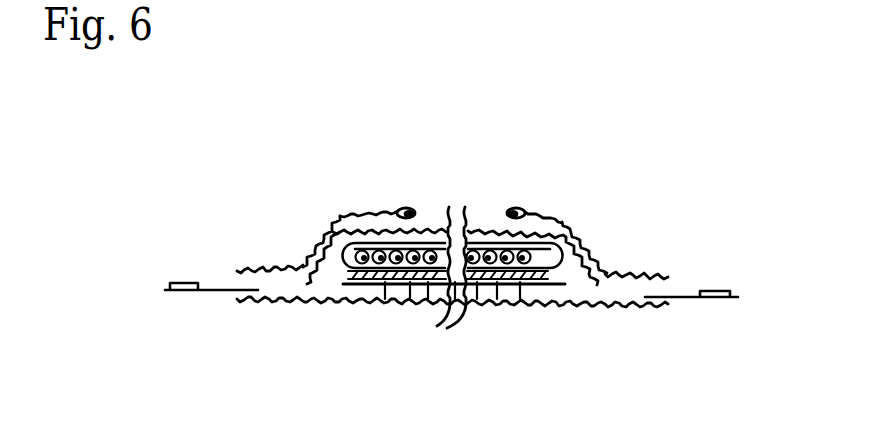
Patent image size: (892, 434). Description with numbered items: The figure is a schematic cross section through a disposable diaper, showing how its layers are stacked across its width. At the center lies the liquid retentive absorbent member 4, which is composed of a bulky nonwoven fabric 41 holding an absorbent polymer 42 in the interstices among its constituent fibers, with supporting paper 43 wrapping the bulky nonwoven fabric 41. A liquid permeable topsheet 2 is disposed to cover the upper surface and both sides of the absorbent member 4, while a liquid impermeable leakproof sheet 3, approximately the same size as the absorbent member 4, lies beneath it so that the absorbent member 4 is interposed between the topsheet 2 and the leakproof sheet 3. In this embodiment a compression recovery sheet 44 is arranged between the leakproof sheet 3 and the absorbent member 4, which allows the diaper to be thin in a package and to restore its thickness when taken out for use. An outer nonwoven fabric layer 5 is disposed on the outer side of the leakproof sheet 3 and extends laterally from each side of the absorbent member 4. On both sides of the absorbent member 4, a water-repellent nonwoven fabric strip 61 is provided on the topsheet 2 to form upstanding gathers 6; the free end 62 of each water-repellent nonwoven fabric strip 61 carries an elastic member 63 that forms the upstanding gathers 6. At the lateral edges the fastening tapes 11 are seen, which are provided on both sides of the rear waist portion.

The topsheet 2 is at (483, 212).
The leakproof sheet 3 is at (360, 286).
The absorbent member 4 is at (497, 368).
The outer nonwoven fabric layer 5 is at (293, 297).
The upstanding gathers 6 is at (285, 137).
The fastening tapes 11 is at (707, 333).
The bulky nonwoven fabric 41 is at (383, 282).
The absorbent polymer 42 is at (407, 282).
The supporting paper 43 is at (475, 285).
The compression recovery sheet 44 is at (520, 284).
The water-repellent nonwoven fabric strip 61 is at (575, 208).
The free end 62 is at (504, 207).
The elastic member 63 is at (541, 208).